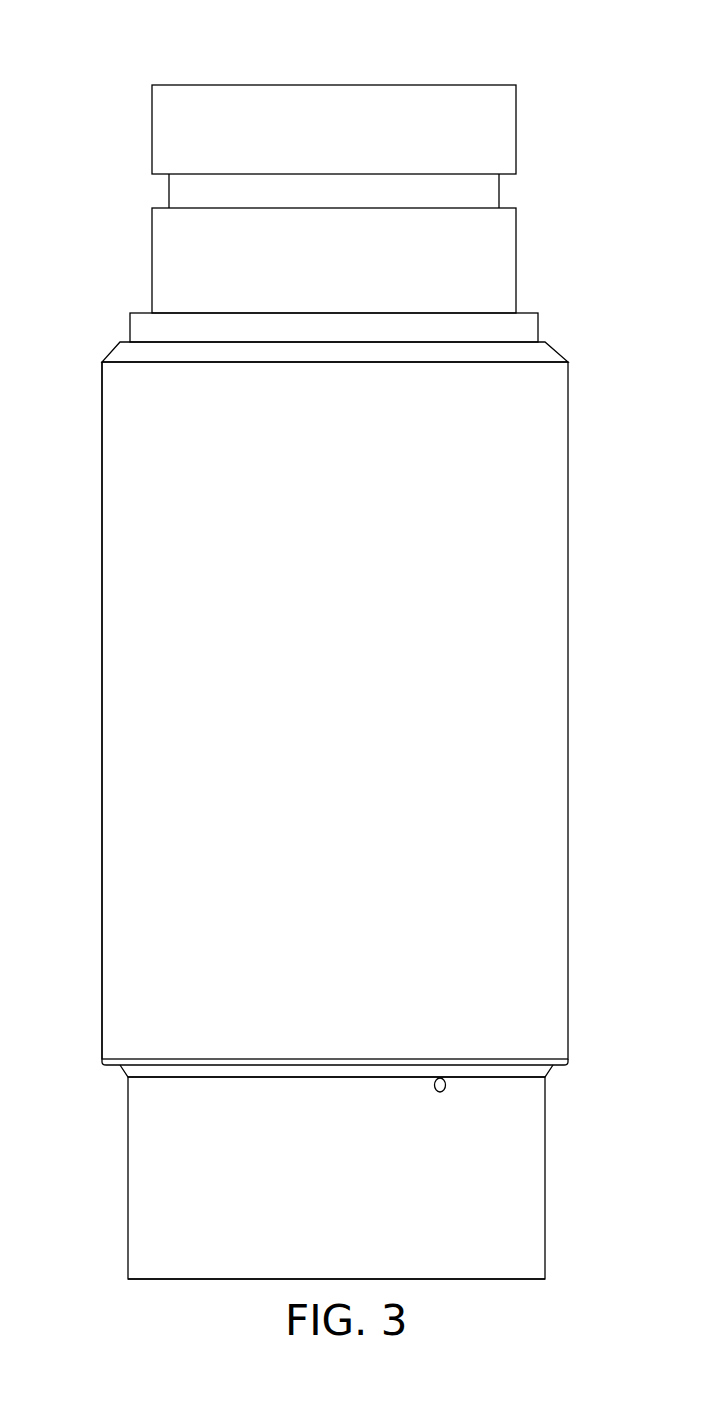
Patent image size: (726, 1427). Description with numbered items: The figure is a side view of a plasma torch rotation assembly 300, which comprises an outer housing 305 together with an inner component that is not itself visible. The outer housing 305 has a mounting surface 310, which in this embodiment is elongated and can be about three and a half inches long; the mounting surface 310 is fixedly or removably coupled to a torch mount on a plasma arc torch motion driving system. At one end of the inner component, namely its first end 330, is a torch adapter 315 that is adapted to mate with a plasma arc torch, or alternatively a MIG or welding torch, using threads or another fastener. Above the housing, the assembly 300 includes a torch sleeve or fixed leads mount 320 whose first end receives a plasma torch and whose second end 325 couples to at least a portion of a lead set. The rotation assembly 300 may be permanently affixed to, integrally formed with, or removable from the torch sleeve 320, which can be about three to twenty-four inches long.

The plasma torch rotation assembly 300 is at (55, 140).
The outer housing 305 is at (545, 632).
The mounting surface 310 is at (120, 724).
The torch adapter 315 is at (520, 1190).
The torch sleeve 320 is at (542, 200).
The second end of torch sleeve 325 is at (440, 68).
The first end of inner component 330 is at (472, 1287).